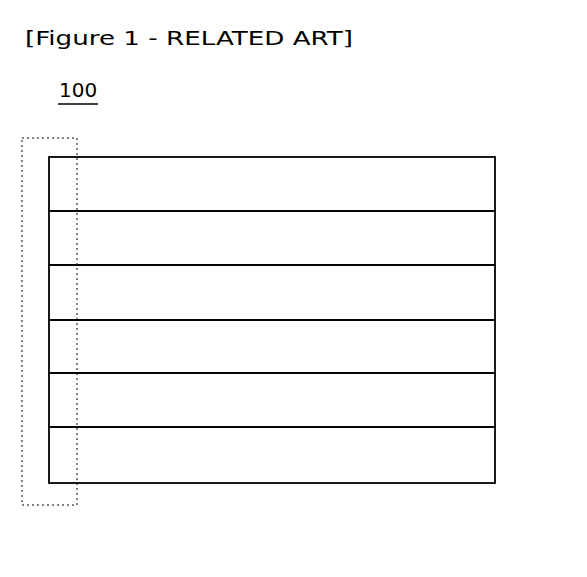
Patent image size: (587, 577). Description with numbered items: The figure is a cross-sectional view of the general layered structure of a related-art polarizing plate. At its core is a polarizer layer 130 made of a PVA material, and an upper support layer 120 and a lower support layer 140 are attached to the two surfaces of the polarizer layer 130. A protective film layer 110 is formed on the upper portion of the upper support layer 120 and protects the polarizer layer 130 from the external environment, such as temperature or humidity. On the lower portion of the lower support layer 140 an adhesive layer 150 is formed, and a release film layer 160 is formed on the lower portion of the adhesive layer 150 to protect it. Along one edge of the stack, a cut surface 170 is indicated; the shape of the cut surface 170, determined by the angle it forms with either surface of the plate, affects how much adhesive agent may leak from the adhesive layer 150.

The protective film layer 110 is at (484, 185).
The upper support layer 120 is at (484, 239).
The polarizer layer 130 is at (484, 293).
The lower support layer 140 is at (484, 347).
The adhesive layer 150 is at (484, 401).
The release film layer 160 is at (484, 455).
The cut surface 170 is at (50, 507).